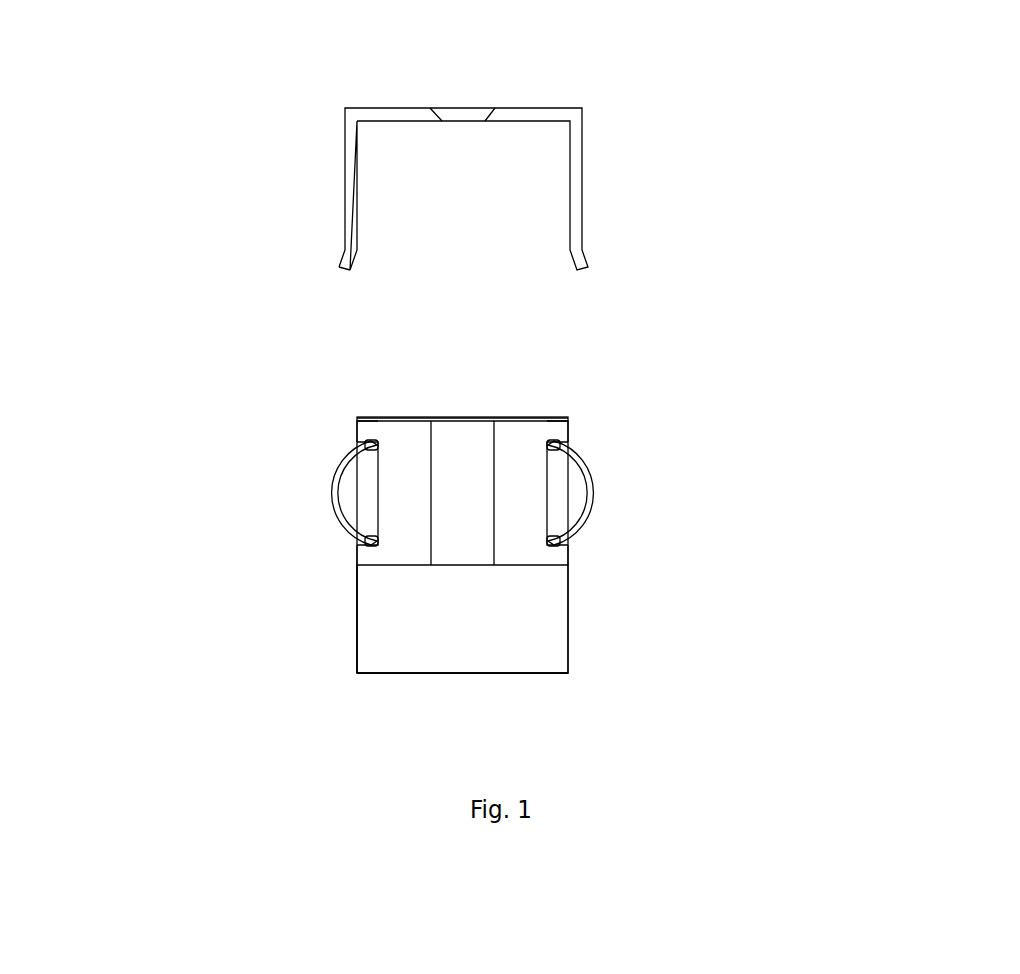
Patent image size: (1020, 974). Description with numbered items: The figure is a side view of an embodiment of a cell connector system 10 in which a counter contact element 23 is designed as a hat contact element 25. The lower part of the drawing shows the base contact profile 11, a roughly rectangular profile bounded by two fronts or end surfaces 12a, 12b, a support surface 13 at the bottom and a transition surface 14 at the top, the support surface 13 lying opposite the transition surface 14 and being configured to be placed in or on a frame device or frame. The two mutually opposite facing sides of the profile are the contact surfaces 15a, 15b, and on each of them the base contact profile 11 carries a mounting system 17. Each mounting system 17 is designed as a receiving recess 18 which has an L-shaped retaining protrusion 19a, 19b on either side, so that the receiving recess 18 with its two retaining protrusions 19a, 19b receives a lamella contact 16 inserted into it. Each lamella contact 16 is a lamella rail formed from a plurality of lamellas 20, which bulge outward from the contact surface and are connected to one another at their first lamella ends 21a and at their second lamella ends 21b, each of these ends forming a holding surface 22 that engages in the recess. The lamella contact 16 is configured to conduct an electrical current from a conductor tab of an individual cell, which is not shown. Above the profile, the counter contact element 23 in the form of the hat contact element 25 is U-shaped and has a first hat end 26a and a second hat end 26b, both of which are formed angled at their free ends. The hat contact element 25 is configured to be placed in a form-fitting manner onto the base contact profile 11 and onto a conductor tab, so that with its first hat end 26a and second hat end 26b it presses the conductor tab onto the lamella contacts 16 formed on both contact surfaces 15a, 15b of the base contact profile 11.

The cell connector system 10 is at (645, 352).
The base contact profile 11 is at (570, 572).
The front or end surface 12a is at (397, 615).
The front or end surface 12b is at (354, 644).
The support surface 13 is at (516, 677).
The transition surface 14 is at (472, 418).
The contact surface 15a is at (369, 472).
The contact surface 15b is at (552, 472).
The lamella contact 16 is at (463, 505).
The mounting system 17 is at (477, 460).
The receiving recess 18 is at (348, 483).
The retaining protrusion 19a is at (356, 428).
The retaining protrusion 19b is at (356, 556).
The lamella 20 is at (463, 505).
The first lamella end 21a is at (372, 437).
The second lamella end 21b is at (627, 683).
The holding surface 22 is at (387, 506).
The counter contact element 23 is at (519, 69).
The hat contact element 25 is at (532, 107).
The first hat end 26a is at (348, 195).
The second hat end 26b is at (580, 195).